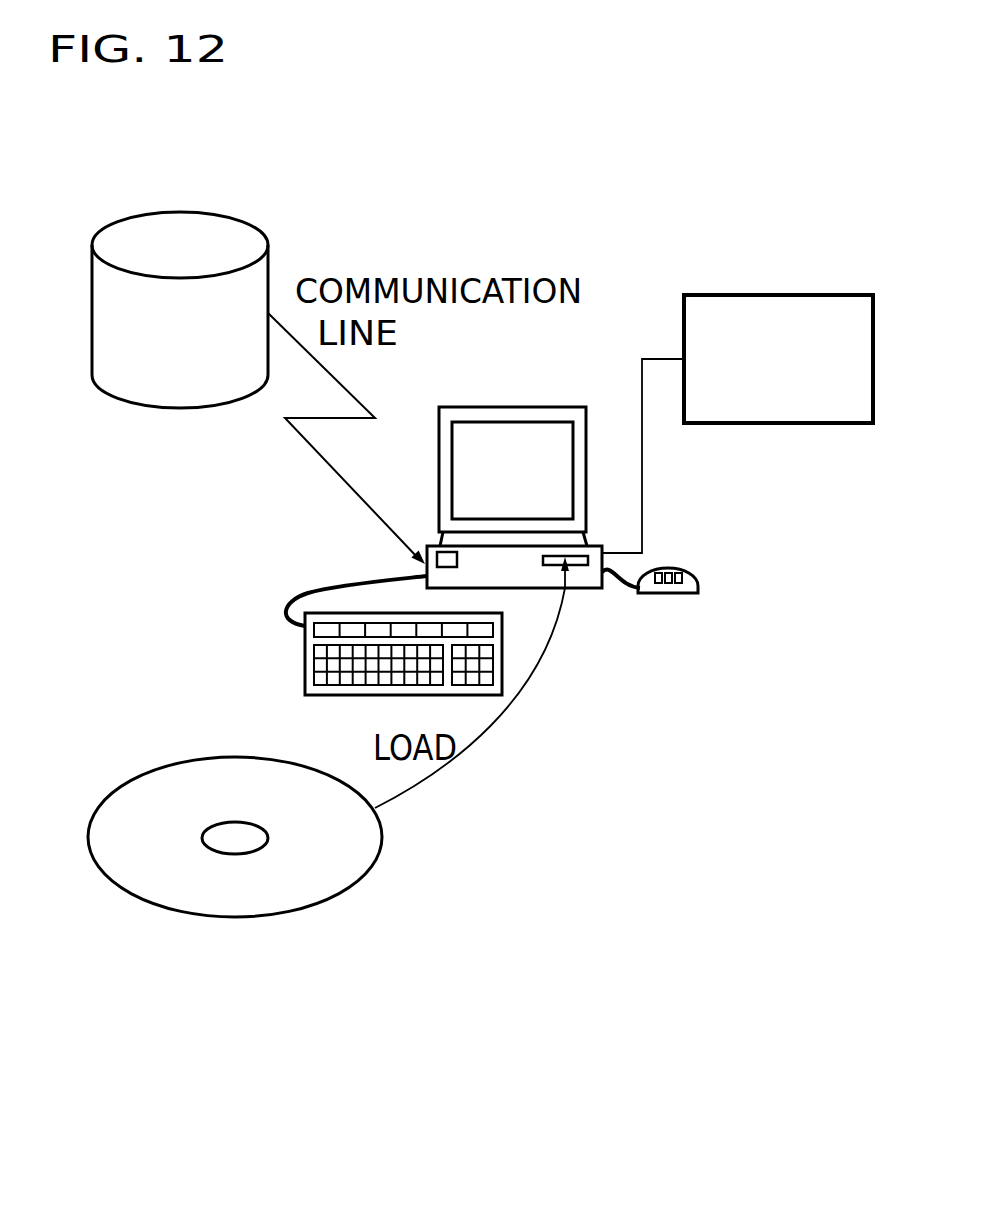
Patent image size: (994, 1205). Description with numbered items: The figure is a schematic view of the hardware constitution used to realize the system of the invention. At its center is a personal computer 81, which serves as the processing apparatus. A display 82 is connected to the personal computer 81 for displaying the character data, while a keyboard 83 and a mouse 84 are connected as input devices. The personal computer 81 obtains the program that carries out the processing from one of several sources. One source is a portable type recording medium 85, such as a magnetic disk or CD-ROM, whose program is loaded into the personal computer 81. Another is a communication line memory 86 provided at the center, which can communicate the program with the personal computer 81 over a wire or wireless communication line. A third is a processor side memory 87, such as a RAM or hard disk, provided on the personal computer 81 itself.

The personal computer 81 is at (582, 588).
The display 82 is at (557, 407).
The keyboard 83 is at (305, 668).
The mouse 84 is at (682, 593).
The portable type recording medium 85 is at (221, 920).
The communication line memory 86 is at (158, 403).
The processor side memory 87 is at (772, 423).